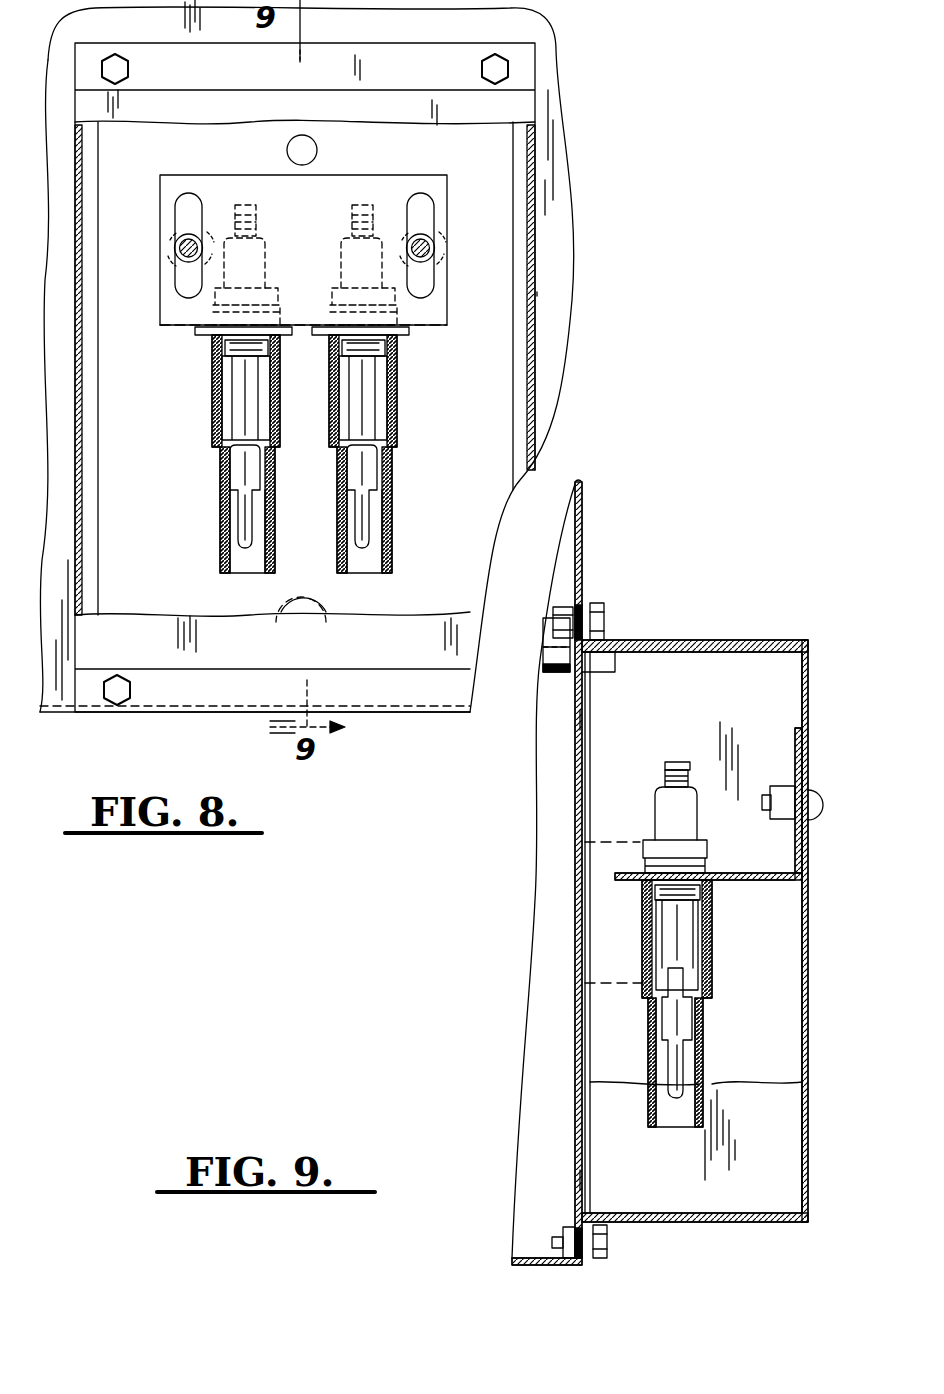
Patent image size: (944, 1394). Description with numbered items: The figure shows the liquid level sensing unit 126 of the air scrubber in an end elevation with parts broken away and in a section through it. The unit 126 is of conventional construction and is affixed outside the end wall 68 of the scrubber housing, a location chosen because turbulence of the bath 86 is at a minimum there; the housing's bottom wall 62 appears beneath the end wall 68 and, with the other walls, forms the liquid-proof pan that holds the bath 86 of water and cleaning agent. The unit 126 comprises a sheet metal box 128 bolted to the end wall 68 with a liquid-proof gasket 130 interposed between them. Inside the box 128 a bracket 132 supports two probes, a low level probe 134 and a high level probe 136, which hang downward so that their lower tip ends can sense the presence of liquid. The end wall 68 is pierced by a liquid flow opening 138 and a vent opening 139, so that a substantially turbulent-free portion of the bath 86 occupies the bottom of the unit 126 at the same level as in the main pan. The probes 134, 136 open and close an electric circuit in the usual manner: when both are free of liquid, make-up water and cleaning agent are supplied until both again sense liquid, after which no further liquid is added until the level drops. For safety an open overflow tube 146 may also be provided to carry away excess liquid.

In FIG. 8, the bottom wall 62 is at (200, 712).
In FIG. 9, the bottom wall 62 is at (520, 1262).
In FIG. 8, the end wall 68 is at (563, 193).
In FIG. 9, the end wall 68 is at (582, 530).
In FIG. 9, the bath 86 is at (778, 1141).
In FIG. 8, the liquid level sensing unit 126 is at (538, 293).
In FIG. 9, the liquid level sensing unit 126 is at (695, 612).
In FIG. 9, the sheet metal box 128 is at (802, 700).
In FIG. 8, the liquid-proof gasket 130 is at (526, 156).
In FIG. 9, the liquid-proof gasket 130 is at (590, 705).
In FIG. 8, the bracket 132 is at (388, 183).
In FIG. 9, the bracket 132 is at (746, 880).
In FIG. 8, the low level probe 134 is at (242, 515).
In FIG. 9, the low level probe 134 is at (683, 1062).
In FIG. 8, the high level probe 136 is at (370, 505).
In FIG. 8, the liquid flow opening 138 is at (318, 612).
In FIG. 9, the liquid flow opening 138 is at (585, 1178).
In FIG. 8, the vent opening 139 is at (290, 150).
In FIG. 9, the vent opening 139 is at (580, 720).
In FIG. 9, the overflow tube 146 is at (614, 842).